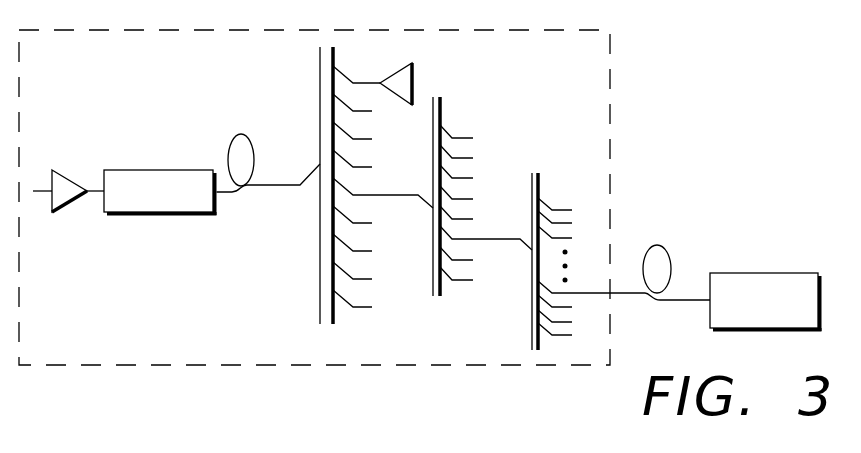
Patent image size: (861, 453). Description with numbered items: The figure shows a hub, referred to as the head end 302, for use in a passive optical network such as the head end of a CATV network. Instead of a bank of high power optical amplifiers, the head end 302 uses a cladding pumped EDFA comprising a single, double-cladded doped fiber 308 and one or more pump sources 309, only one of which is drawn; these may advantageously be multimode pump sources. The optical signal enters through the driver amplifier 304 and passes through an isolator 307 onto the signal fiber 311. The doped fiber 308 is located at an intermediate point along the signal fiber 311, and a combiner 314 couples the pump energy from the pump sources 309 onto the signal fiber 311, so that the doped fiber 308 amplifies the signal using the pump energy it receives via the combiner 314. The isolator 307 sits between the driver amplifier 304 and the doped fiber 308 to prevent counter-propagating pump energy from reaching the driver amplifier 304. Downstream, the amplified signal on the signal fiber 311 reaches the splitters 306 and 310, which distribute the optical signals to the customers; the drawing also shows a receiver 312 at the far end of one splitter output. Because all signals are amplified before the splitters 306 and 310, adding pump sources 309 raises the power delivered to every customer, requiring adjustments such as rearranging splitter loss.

The head end 302 is at (611, 151).
The driver amplifier 304 is at (70, 206).
The splitter 306 is at (431, 240).
The isolator 307 is at (190, 215).
The double-cladded doped fiber 308 is at (236, 135).
The pump source 309 is at (393, 72).
The splitter 310 is at (530, 193).
The signal fiber 311 is at (272, 188).
The receiver 312 is at (778, 272).
The combiner 314 is at (318, 94).